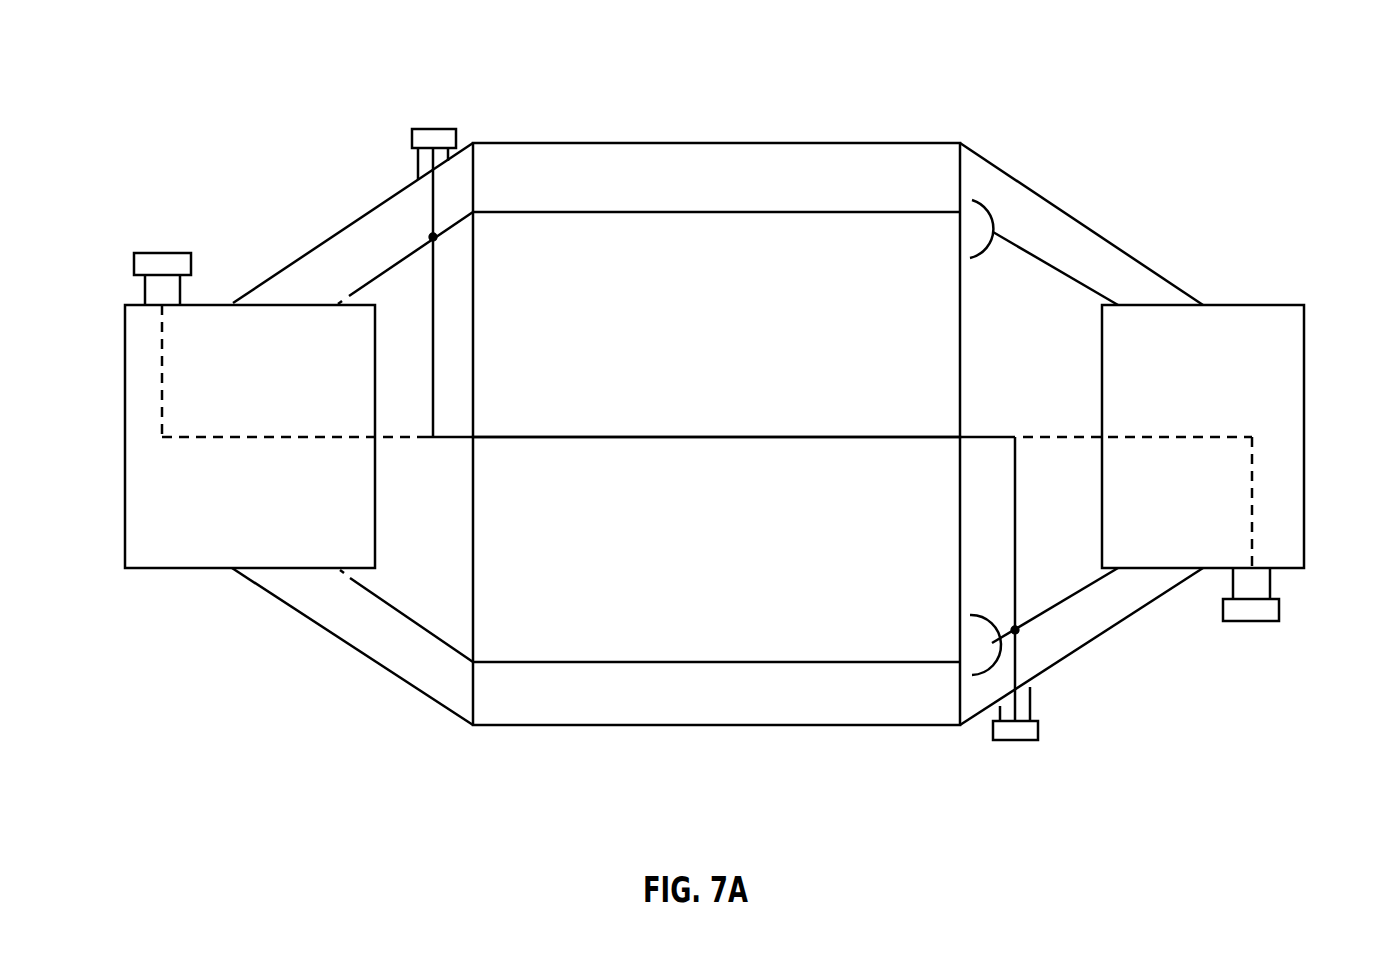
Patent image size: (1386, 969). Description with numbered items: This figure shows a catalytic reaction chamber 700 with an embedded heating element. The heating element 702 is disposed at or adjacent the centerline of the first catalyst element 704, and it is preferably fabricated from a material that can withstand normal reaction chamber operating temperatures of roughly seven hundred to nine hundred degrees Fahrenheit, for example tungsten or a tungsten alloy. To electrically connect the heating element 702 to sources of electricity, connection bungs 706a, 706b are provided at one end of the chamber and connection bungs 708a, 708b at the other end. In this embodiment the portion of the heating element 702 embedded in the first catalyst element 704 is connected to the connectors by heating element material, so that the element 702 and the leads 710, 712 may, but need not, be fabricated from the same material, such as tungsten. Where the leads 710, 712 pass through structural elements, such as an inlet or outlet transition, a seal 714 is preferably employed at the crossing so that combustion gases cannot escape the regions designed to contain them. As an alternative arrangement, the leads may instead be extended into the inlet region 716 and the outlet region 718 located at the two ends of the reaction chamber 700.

The reaction chamber 700 is at (1215, 79).
The heating element 702 is at (688, 437).
The first catalyst element 704 is at (658, 583).
The connection bung 706a is at (438, 138).
The connection bung 706b is at (168, 267).
The connection bung 708a is at (1010, 732).
The connection bung 708b is at (1258, 612).
The lead 710 is at (430, 315).
The lead 712 is at (1232, 435).
The seal 714 is at (433, 237).
The inlet region 716 is at (173, 527).
The outlet region 718 is at (1250, 332).